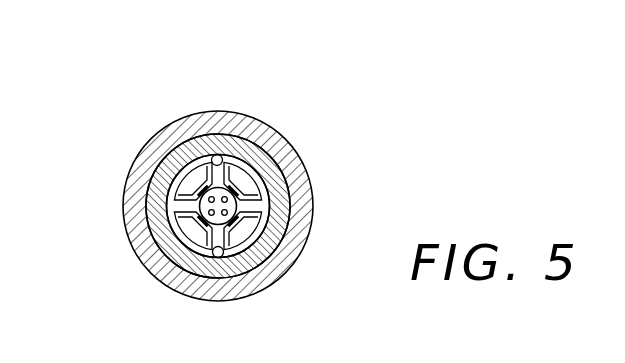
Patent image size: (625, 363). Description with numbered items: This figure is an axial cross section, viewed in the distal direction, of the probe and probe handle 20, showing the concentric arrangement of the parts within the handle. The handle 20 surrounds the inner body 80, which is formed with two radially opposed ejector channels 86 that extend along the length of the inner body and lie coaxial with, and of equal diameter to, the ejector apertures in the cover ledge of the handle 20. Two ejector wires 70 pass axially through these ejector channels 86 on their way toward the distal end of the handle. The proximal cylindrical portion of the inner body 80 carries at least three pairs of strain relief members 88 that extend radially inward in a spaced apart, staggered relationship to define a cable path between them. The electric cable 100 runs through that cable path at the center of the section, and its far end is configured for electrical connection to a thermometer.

The handle 20 is at (302, 163).
The inner body 80 is at (290, 233).
The ejector wires 70 is at (232, 158).
The strain relief members 88 is at (204, 158).
The ejector channels 86 is at (210, 250).
The electric cable 100 is at (200, 204).